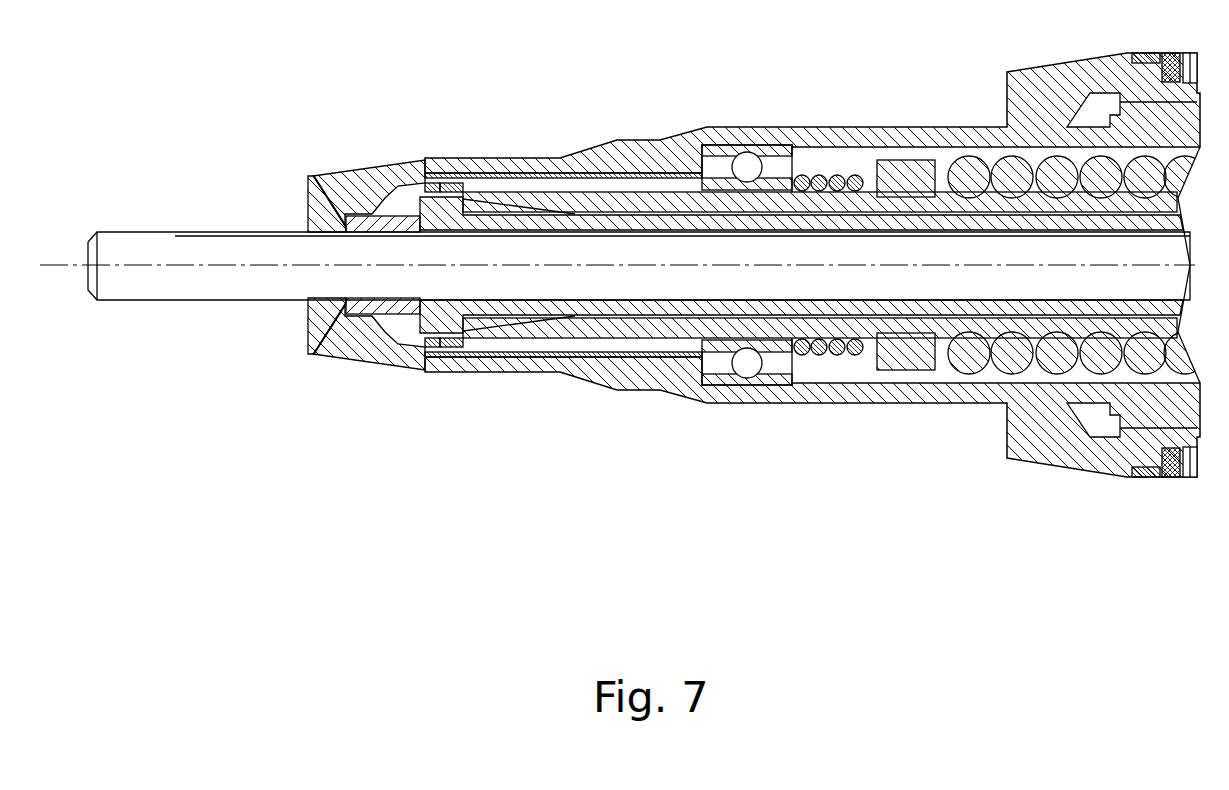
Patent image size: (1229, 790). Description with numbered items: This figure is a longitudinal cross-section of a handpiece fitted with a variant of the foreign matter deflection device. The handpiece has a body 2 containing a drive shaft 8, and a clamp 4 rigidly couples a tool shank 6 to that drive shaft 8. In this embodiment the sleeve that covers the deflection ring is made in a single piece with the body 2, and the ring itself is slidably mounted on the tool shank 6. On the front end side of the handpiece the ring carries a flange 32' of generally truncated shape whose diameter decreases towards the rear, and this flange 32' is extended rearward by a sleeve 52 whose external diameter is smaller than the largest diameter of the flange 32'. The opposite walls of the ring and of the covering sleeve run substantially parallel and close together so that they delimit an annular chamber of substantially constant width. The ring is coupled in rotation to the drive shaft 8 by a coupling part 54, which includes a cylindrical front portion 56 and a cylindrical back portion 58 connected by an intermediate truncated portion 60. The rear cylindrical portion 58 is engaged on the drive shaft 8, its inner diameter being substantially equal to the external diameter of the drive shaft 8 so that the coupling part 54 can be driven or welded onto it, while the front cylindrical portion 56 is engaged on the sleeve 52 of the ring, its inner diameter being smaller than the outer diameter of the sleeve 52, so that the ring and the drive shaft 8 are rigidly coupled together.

The body 2 is at (633, 150).
The clamp 4 is at (445, 312).
The tool shank 6 is at (162, 243).
The drive shaft 8 is at (595, 193).
The sealing lip 32' is at (294, 339).
The sleeve 52 is at (392, 312).
The coupling part 54 is at (500, 180).
The front cylindrical portion 56 is at (428, 172).
The rear cylindrical portion 58 is at (500, 345).
The intermediate truncated portion 60 is at (458, 182).